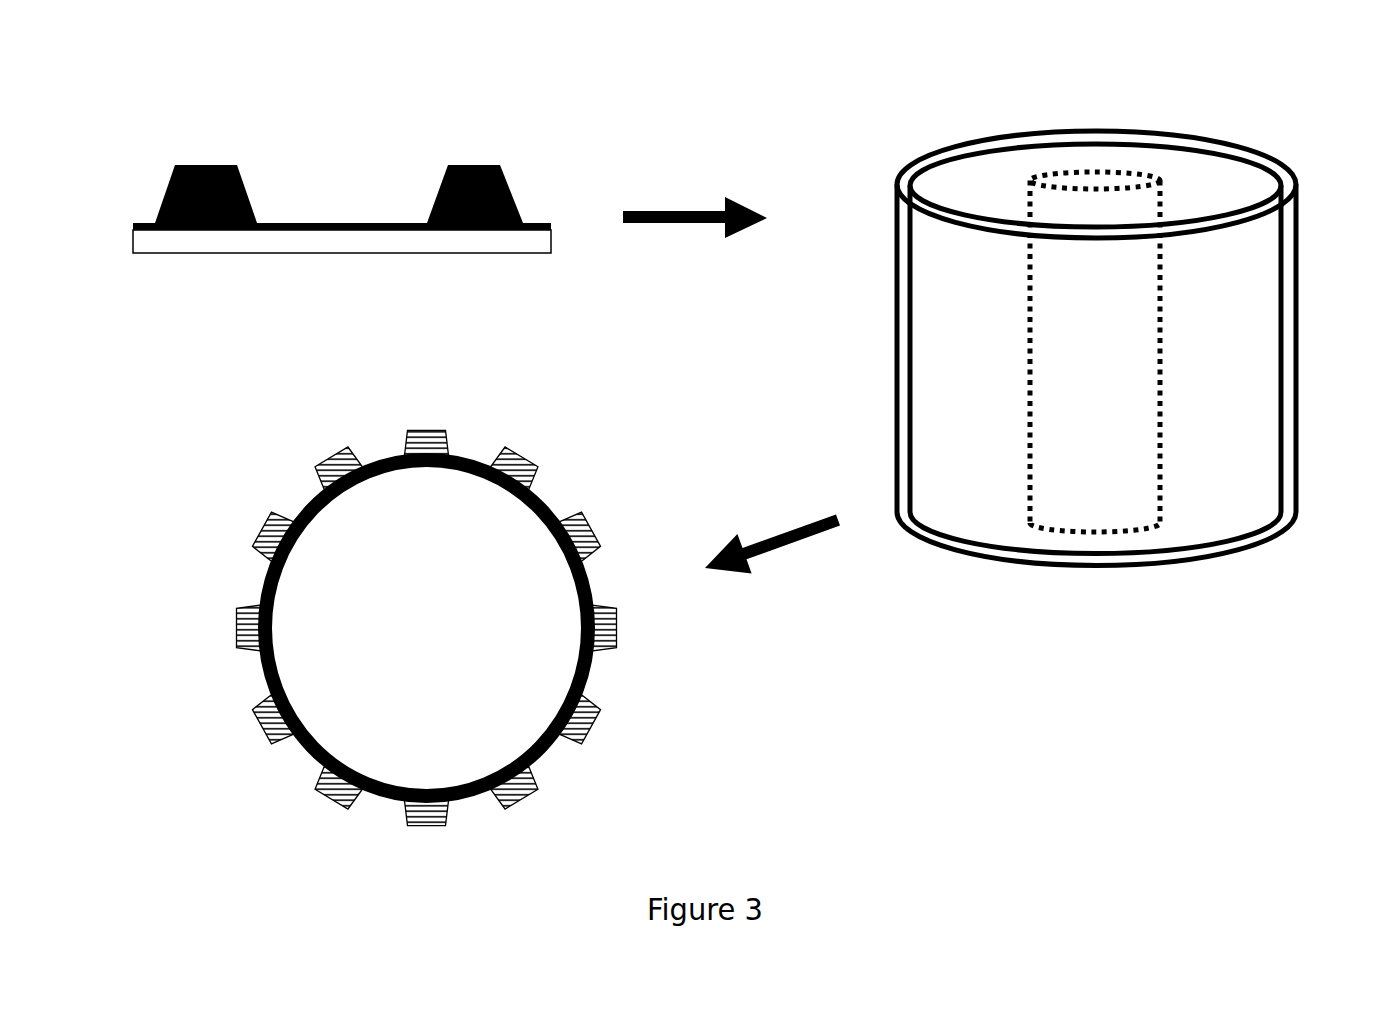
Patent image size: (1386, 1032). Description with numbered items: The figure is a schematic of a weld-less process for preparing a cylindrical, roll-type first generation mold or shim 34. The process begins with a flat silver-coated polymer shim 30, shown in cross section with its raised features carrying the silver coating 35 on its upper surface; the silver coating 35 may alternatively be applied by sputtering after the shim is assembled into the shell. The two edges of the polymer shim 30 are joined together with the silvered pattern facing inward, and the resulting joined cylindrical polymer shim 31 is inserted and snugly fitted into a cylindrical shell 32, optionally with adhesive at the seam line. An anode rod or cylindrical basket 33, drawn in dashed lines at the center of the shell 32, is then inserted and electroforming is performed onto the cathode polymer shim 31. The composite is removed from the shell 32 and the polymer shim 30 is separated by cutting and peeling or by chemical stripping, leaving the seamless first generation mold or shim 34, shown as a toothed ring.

The silver-coated polymer shim 30 is at (300, 182).
The silver coating 35 is at (475, 165).
The joined cylindrical polymer shim 31 is at (1233, 182).
The cylindrical shell 32 is at (900, 168).
The anode rod or cylindrical basket 33 is at (1032, 487).
The first generation mold or shim 34 is at (254, 727).